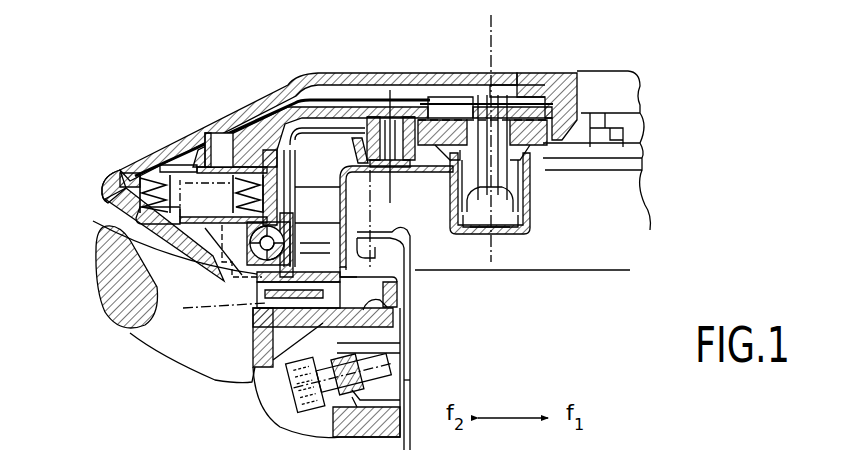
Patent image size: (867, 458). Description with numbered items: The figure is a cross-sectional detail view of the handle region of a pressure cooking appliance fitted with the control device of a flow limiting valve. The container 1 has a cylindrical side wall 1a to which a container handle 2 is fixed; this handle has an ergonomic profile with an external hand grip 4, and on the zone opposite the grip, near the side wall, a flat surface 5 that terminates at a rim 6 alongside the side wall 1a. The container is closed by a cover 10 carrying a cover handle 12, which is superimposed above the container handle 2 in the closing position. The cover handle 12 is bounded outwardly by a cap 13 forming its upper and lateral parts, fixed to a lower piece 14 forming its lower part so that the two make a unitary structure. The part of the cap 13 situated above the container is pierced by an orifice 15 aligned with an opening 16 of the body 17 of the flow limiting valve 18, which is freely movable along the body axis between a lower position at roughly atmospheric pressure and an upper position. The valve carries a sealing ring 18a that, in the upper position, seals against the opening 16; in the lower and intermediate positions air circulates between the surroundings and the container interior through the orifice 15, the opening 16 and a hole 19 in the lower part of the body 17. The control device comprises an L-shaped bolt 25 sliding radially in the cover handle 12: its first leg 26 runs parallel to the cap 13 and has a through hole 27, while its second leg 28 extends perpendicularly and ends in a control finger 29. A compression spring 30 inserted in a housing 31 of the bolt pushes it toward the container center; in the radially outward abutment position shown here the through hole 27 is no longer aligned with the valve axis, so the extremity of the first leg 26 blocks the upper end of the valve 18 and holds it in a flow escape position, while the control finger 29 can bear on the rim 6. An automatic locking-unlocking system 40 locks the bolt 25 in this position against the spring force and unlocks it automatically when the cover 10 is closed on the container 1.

The container 1 is at (419, 352).
The side wall 1a is at (417, 378).
The container handle 2 is at (161, 357).
The external hand grip 4 is at (103, 273).
The flat surface 5 is at (370, 300).
The rim 6 is at (400, 285).
The cover 10 is at (600, 62).
The cover handle 12 is at (99, 182).
The cap 13 is at (296, 74).
The lower piece 14 is at (110, 203).
The orifice 15 is at (502, 90).
The opening 16 is at (530, 185).
The body 17 is at (520, 217).
The flow limiting valve 18 is at (486, 100).
The sealing ring 18a is at (458, 193).
The hole 19 is at (508, 237).
The bolt 25 is at (272, 131).
The first leg 26 is at (345, 107).
The through hole 27 is at (440, 105).
The second leg 28 is at (247, 167).
The control finger 29 is at (300, 380).
The compression spring 30 is at (148, 168).
The housing 31 is at (196, 165).
The automatic locking-unlocking system 40 is at (257, 262).